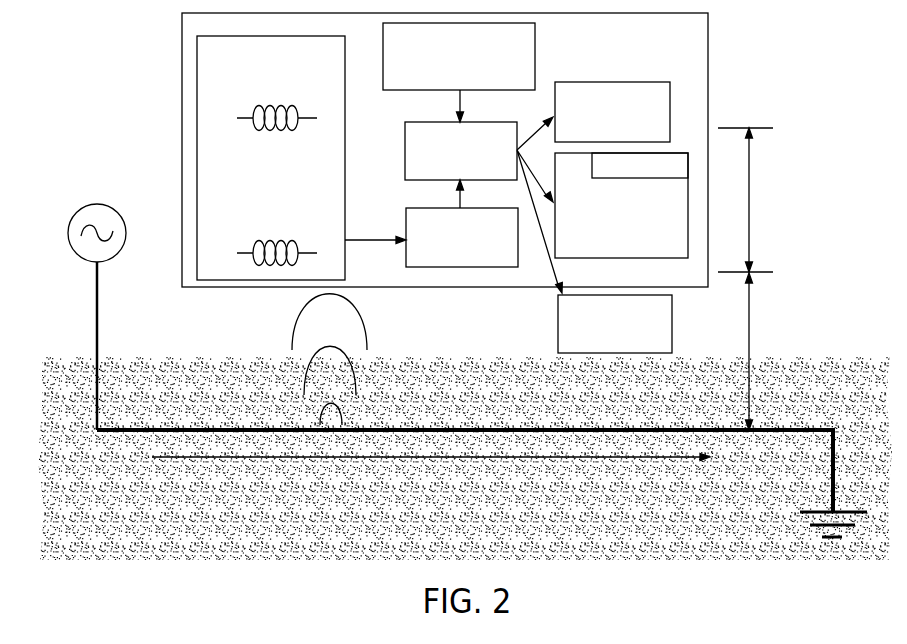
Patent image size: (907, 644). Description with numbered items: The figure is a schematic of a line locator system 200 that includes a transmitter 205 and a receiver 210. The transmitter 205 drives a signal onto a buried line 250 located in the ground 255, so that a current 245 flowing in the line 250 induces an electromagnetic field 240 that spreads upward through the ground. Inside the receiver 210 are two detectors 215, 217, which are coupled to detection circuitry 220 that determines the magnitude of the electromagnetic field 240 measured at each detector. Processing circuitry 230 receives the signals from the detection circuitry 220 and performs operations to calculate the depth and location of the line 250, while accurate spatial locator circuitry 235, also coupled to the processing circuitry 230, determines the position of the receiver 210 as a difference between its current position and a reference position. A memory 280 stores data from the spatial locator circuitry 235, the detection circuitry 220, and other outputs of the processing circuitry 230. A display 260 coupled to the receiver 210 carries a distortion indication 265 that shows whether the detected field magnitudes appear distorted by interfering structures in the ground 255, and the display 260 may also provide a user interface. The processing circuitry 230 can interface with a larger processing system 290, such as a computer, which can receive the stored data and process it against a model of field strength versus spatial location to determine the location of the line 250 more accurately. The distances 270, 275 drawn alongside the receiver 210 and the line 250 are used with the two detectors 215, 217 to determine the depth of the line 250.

The line locator system 200 is at (118, 130).
The transmitter 205 is at (76, 211).
The receiver 210 is at (197, 67).
The detector 215 is at (275, 240).
The detector 217 is at (275, 103).
The detection circuitry 220 is at (458, 268).
The processing circuitry 230 is at (415, 181).
The accurate spatial locator circuitry 235 is at (415, 92).
The electromagnetic field 240 is at (298, 325).
The current 245 is at (232, 458).
The line 250 is at (783, 429).
The ground 255 is at (626, 491).
The display 260 is at (607, 248).
The distortion indication 265 is at (682, 153).
The distance 270 is at (750, 351).
The distance 275 is at (746, 200).
The memory 280 is at (597, 139).
The processing system 290 is at (597, 339).